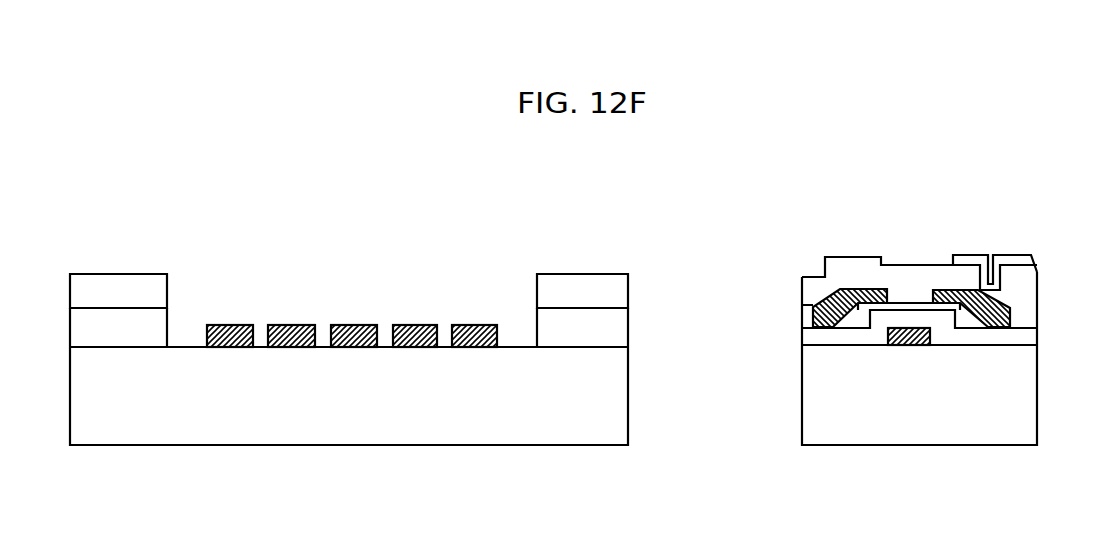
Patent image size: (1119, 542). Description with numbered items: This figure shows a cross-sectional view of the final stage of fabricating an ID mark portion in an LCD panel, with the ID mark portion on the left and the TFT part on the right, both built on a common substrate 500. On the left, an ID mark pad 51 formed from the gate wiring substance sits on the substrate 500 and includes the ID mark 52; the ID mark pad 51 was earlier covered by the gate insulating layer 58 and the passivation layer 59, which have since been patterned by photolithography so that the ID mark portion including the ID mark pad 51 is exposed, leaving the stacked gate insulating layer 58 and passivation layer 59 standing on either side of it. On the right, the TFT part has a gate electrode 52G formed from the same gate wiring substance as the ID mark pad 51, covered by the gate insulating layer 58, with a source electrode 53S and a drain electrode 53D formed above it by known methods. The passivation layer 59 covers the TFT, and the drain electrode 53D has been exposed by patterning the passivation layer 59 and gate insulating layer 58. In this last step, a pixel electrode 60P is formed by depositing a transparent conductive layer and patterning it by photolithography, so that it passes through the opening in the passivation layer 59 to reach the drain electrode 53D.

The substrate 500 is at (612, 393).
The gate insulating layer 58 is at (615, 330).
The passivation layer 59 is at (622, 298).
The ID mark pad 51 is at (207, 350).
The ID mark 52 is at (448, 333).
The gate electrode 52G is at (900, 347).
The source electrode 53S is at (833, 293).
The drain electrode 53D is at (953, 297).
The pixel electrode 60P is at (983, 262).